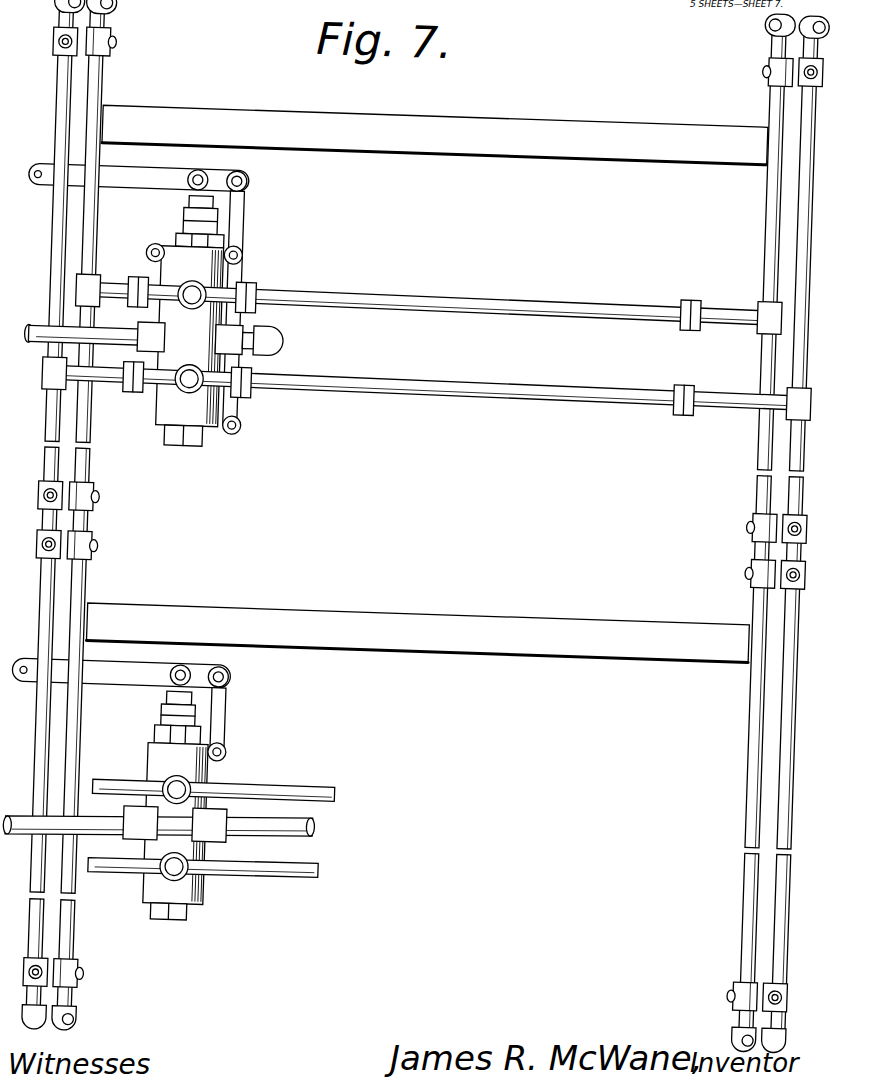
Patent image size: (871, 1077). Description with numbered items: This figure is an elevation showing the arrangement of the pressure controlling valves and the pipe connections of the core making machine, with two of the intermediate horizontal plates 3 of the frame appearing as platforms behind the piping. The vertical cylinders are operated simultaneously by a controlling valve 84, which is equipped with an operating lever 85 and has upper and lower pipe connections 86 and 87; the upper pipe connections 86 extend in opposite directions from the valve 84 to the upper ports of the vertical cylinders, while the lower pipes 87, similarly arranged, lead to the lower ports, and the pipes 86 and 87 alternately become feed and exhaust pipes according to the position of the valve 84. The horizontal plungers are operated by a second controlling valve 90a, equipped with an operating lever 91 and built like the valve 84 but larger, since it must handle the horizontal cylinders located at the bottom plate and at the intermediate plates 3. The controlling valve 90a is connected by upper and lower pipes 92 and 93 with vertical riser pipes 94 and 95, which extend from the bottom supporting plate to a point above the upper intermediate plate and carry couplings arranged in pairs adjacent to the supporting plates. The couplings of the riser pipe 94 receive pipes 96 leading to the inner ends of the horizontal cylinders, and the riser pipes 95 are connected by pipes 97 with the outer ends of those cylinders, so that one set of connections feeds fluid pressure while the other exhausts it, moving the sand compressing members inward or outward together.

The intermediate horizontal plate 3 is at (426, 383).
The controlling valve 84 is at (159, 767).
The operating lever 85 is at (103, 690).
The upper pipe connections 86 is at (288, 790).
The lower pipe connections 87 is at (278, 882).
The controlling valve 90a is at (218, 270).
The operating lever 91 is at (128, 199).
The upper pipe 92 is at (440, 300).
The lower pipe 93 is at (438, 384).
The riser pipe 94 is at (89, 470).
The riser pipe 95 is at (45, 458).
The pipes 96 is at (100, 44).
The pipes 97 is at (48, 42).